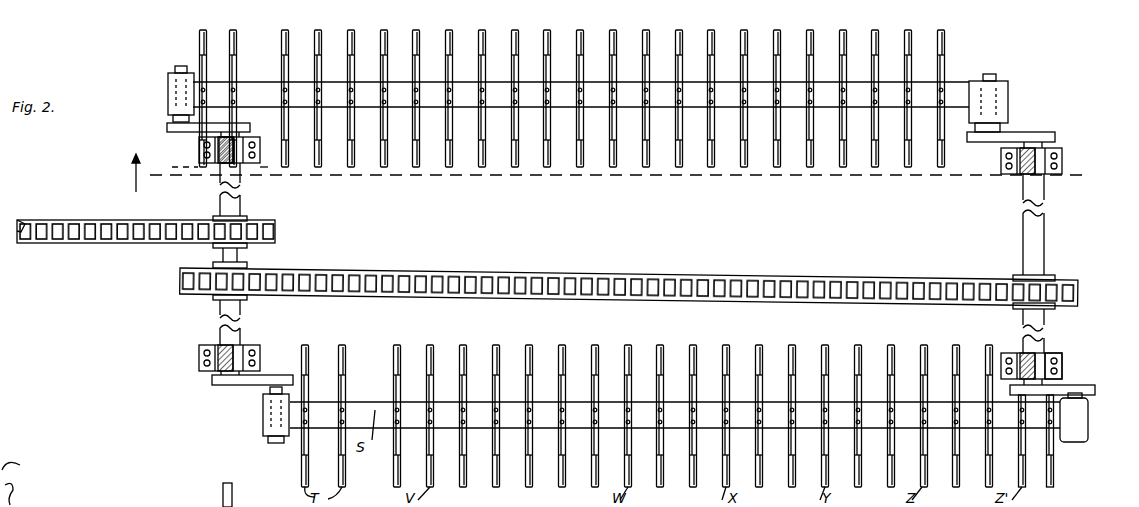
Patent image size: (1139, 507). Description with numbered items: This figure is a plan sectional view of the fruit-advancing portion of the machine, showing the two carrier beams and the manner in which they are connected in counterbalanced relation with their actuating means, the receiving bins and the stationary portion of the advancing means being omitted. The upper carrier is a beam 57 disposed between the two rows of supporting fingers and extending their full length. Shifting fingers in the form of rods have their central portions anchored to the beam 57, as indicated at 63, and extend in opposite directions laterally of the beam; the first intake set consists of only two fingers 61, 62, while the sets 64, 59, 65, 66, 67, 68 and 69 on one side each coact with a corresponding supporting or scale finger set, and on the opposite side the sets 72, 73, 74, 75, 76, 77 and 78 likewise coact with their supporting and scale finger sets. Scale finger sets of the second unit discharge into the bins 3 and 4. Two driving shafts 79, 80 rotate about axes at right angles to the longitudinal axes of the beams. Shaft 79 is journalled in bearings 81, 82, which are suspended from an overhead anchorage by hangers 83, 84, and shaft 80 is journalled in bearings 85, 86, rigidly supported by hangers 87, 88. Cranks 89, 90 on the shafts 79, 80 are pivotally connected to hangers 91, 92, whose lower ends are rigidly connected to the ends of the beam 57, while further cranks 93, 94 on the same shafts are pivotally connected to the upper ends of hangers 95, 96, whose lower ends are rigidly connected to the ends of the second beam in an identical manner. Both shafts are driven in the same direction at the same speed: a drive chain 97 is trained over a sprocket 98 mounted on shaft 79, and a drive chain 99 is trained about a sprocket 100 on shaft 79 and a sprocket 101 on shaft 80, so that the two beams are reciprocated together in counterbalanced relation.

The bin 3 is at (607, 173).
The bin 4 is at (216, 166).
The beam 57 is at (262, 90).
The shifting finger set 59 is at (410, 114).
The shifting finger 61 is at (199, 40).
The shifting finger 62 is at (236, 45).
The anchorage of shifting fingers to beam 63 is at (943, 98).
The shifting finger set 64 is at (312, 114).
The shifting finger set 65 is at (505, 116).
The shifting finger set 66 is at (603, 116).
The shifting finger set 67 is at (704, 116).
The shifting finger set 68 is at (801, 116).
The shifting finger set 69 is at (899, 116).
The shifting finger set 72 is at (322, 169).
The shifting finger set 73 is at (415, 169).
The shifting finger set 74 is at (506, 171).
The shifting finger set 75 is at (607, 171).
The shifting finger set 76 is at (709, 171).
The shifting finger set 77 is at (807, 171).
The shifting finger set 78 is at (902, 171).
The driving shaft 79 is at (220, 208).
The driving shaft 80 is at (1030, 233).
The bearing 81 is at (199, 150).
The bearing 82 is at (199, 362).
The hanger 83 is at (228, 152).
The hanger 84 is at (222, 348).
The bearing 85 is at (1063, 165).
The bearing 86 is at (1052, 358).
The hanger 87 is at (1022, 178).
The hanger 88 is at (1022, 358).
The crank 89 is at (167, 128).
The crank 90 is at (1013, 135).
The hanger 91 is at (168, 92).
The hanger 92 is at (1007, 100).
The crank 93 is at (250, 380).
The crank 94 is at (1075, 388).
The hanger 95 is at (263, 420).
The hanger 96 is at (1080, 422).
The drive chain 97 is at (100, 243).
The sprocket 98 is at (241, 222).
The drive chain 99 is at (450, 270).
The sprocket 100 is at (213, 299).
The sprocket 101 is at (1013, 278).